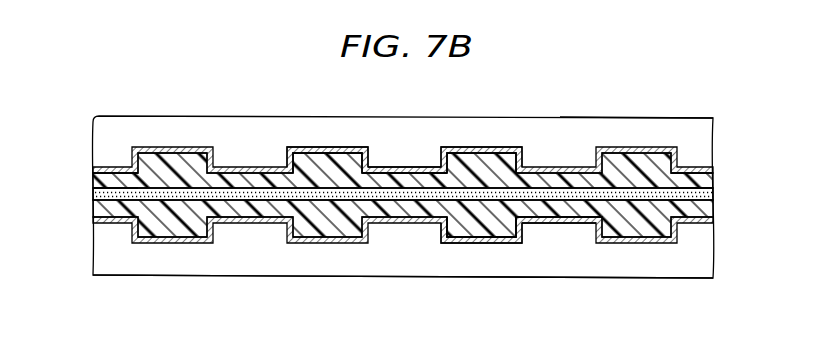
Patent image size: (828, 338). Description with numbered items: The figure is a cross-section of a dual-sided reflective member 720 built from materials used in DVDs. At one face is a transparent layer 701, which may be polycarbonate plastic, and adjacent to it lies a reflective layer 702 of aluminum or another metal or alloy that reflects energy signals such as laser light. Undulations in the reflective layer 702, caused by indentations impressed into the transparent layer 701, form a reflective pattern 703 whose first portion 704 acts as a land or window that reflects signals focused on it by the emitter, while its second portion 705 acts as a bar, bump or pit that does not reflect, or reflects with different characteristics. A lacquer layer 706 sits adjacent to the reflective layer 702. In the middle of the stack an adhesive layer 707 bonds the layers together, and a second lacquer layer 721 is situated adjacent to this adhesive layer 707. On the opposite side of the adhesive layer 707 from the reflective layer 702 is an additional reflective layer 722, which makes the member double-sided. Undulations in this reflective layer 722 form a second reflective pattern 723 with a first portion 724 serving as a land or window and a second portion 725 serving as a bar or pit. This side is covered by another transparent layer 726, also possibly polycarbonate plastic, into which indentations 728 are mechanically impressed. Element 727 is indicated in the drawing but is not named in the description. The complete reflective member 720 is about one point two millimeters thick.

The reflective member 720 is at (133, 74).
The transparent layer 701 is at (636, 280).
The reflective layer 702 is at (258, 224).
The reflective pattern 703 is at (502, 257).
The first portion 704 is at (464, 253).
The second portion 705 is at (558, 236).
The lacquer layer 706 is at (96, 209).
The adhesive layer 707 is at (713, 197).
The lacquer layer 721 is at (708, 183).
The reflective layer 722 is at (253, 167).
The reflective pattern 723 is at (348, 138).
The first portion 724 is at (315, 141).
The second portion 725 is at (403, 159).
The transparent layer 726 is at (648, 125).
The upper thick layer left portion 727 is at (93, 180).
The indentations 728 is at (494, 152).